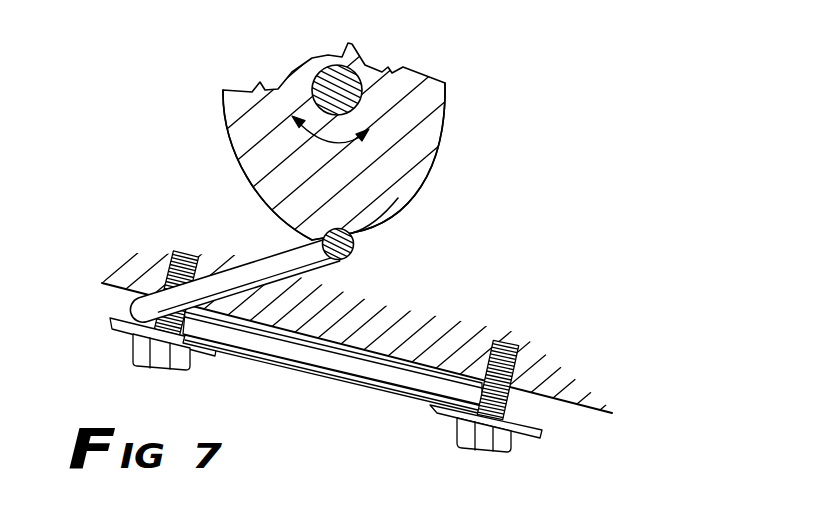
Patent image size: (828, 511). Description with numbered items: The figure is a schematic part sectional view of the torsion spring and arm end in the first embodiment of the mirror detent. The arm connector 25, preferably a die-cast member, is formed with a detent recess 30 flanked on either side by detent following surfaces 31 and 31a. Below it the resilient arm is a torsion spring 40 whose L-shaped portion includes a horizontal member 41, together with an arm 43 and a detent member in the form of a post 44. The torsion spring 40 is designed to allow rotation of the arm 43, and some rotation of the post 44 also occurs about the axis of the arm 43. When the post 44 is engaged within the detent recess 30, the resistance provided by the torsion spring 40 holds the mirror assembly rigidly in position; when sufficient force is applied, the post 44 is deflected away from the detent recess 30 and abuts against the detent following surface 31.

The arm connector 25 is at (463, 115).
The detent following surface 31 is at (242, 175).
The detent following surface 31a is at (433, 156).
The detent recess 30 is at (348, 232).
The torsion spring 40 is at (254, 256).
The post 44 is at (354, 249).
The arm 43 is at (273, 283).
The horizontal member 41 is at (353, 380).